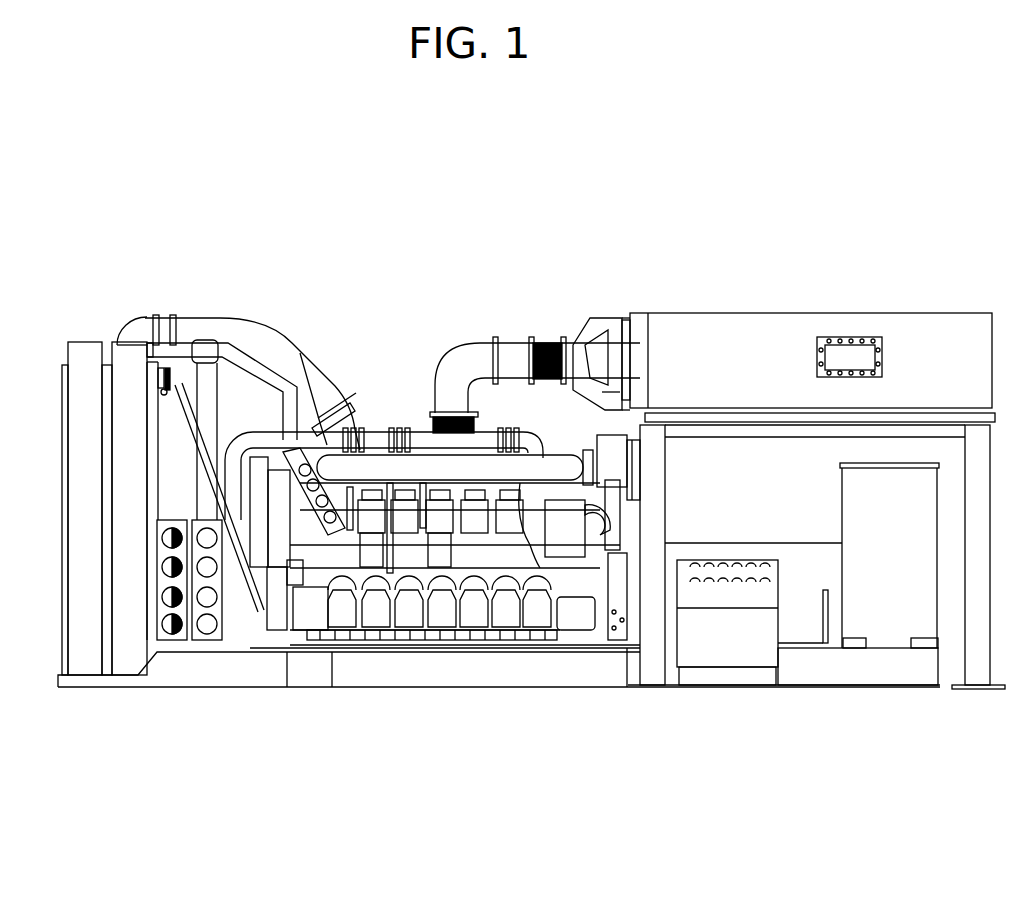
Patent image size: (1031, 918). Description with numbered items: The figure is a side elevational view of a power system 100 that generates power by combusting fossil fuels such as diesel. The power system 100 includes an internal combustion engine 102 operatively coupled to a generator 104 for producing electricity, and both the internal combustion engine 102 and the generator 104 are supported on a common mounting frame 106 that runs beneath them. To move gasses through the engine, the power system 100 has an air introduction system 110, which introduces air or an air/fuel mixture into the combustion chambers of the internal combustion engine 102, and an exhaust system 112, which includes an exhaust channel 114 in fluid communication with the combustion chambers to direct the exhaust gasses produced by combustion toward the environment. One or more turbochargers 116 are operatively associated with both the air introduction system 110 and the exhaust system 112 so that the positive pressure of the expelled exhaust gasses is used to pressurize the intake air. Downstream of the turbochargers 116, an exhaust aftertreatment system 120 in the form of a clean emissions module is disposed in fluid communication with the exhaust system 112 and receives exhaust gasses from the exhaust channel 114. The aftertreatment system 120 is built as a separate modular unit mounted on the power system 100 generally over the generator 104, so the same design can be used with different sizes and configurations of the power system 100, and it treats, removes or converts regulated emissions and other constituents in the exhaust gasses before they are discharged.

The power system 100 is at (404, 242).
The internal combustion engine 102 is at (640, 705).
The generator 104 is at (947, 705).
The common mounting frame 106 is at (183, 673).
The air introduction system 110 is at (573, 457).
The exhaust system 112 is at (953, 230).
The exhaust channel 114 is at (453, 350).
The turbocharger 116 is at (418, 452).
The exhaust aftertreatment system 120 is at (686, 305).